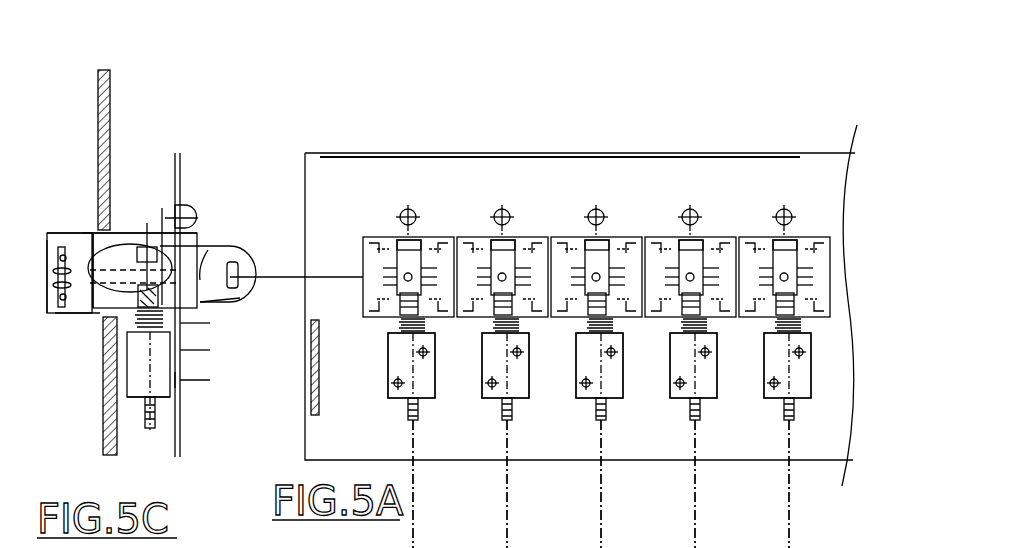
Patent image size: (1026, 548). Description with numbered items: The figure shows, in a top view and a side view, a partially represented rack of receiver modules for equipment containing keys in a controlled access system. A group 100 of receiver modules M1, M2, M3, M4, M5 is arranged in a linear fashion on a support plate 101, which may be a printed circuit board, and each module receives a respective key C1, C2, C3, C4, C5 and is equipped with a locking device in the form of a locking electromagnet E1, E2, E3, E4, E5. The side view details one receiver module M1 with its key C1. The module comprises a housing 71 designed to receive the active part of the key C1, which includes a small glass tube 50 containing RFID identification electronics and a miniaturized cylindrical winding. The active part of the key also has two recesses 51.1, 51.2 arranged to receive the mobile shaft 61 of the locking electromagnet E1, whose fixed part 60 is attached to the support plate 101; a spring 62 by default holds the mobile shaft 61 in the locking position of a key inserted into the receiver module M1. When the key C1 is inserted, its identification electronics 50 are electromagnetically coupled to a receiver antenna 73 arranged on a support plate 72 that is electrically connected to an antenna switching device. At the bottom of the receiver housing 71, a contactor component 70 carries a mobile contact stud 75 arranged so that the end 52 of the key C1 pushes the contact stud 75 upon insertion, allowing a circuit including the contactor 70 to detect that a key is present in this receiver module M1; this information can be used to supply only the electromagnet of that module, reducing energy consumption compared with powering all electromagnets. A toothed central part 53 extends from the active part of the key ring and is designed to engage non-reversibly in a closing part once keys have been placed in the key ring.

In FIG. 5A, the group of modules 100 is at (405, 150).
In FIG. 5C, the support plate 101 is at (187, 440).
In FIG. 5A, the support plate 101 is at (320, 180).
In FIG. 5C, the receiver module M1 is at (200, 233).
In FIG. 5A, the receiver module M1 is at (440, 237).
In FIG. 5A, the receiver module M2 is at (535, 237).
In FIG. 5A, the receiver module M3 is at (620, 237).
In FIG. 5A, the receiver module M4 is at (712, 237).
In FIG. 5A, the receiver module M5 is at (808, 237).
In FIG. 5C, the locking electromagnet E1 is at (187, 400).
In FIG. 5A, the locking electromagnet E1 is at (397, 360).
In FIG. 5A, the locking electromagnet E2 is at (491, 360).
In FIG. 5A, the locking electromagnet E3 is at (585, 360).
In FIG. 5A, the locking electromagnet E4 is at (679, 360).
In FIG. 5A, the locking electromagnet E5 is at (773, 360).
In FIG. 5C, the key C1 is at (223, 247).
In FIG. 5A, the key C1 is at (394, 484).
In FIG. 5A, the key C2 is at (487, 484).
In FIG. 5A, the key C3 is at (582, 484).
In FIG. 5A, the key C4 is at (682, 484).
In FIG. 5A, the key C5 is at (769, 484).
In FIG. 5C, the glass tube 50 is at (113, 240).
In FIG. 5C, the recess 51.1 is at (163, 233).
In FIG. 5C, the recess 51.2 is at (207, 267).
In FIG. 5C, the end of the key 52 is at (97, 316).
In FIG. 5C, the toothed central part 53 is at (240, 298).
In FIG. 5C, the fixed part 60 is at (137, 383).
In FIG. 5C, the mobile shaft 61 is at (187, 323).
In FIG. 5C, the spring 62 is at (170, 380).
In FIG. 5C, the contactor component 70 is at (43, 267).
In FIG. 5C, the housing 71 is at (93, 230).
In FIG. 5C, the support plate 72 is at (110, 83).
In FIG. 5C, the receiver antenna 73 is at (97, 177).
In FIG. 5C, the mobile contact stud 75 is at (83, 233).